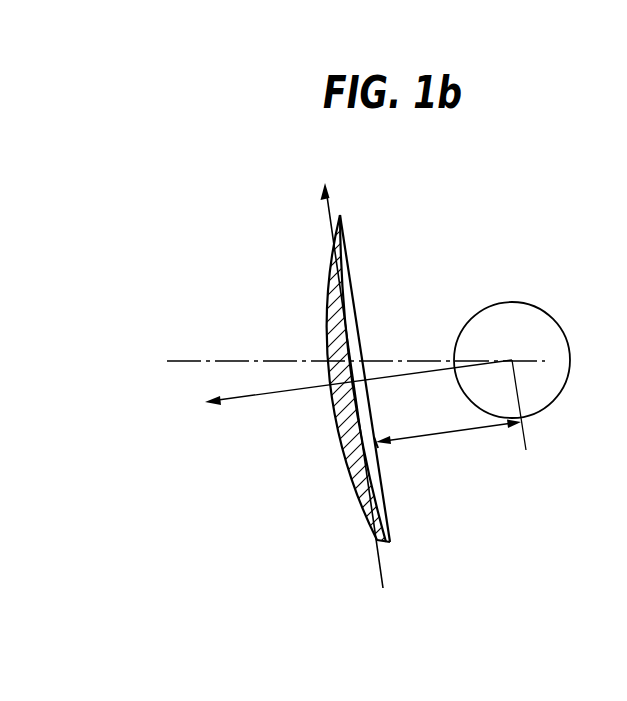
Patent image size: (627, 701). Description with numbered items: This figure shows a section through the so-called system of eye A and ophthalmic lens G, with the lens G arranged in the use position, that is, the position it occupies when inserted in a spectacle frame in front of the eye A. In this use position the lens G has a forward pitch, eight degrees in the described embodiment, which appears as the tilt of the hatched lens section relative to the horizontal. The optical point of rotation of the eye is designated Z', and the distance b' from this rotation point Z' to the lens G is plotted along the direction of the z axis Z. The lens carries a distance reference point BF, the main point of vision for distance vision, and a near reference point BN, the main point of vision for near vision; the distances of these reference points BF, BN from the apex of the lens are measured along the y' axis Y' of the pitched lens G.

The ophthalmic lens G is at (344, 232).
The eye A is at (541, 312).
The y' axis Y' is at (351, 365).
The z axis Z is at (350, 388).
The optical point of rotation of the eye Z' is at (514, 381).
The distance from the rotation point of the eye b' is at (447, 422).
The distance reference point BF is at (306, 339).
The near reference point BN is at (320, 454).